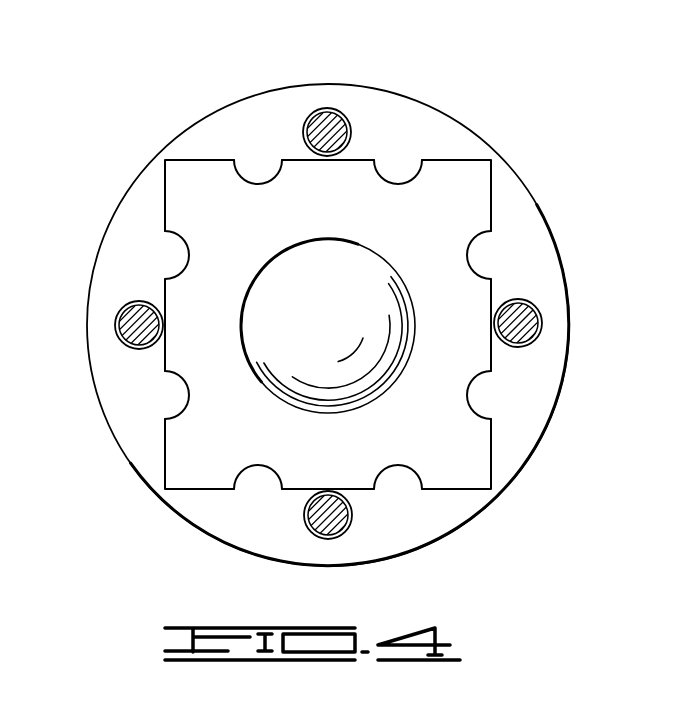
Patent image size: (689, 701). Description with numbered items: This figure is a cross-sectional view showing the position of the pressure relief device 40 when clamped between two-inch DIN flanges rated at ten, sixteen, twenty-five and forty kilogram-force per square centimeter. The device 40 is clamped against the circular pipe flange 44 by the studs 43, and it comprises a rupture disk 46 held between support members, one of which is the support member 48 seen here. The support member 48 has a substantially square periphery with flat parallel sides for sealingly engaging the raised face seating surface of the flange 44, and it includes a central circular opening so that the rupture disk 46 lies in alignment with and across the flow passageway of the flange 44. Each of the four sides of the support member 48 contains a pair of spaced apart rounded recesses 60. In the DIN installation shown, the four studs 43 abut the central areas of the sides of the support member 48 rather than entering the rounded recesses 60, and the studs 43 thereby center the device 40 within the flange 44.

The pressure relief device 40 is at (462, 176).
The studs 43 is at (333, 127).
The pipe flange 44 is at (542, 370).
The rupture disk 46 is at (340, 322).
The support member 48 is at (470, 455).
The rounded recesses 60 is at (383, 175).